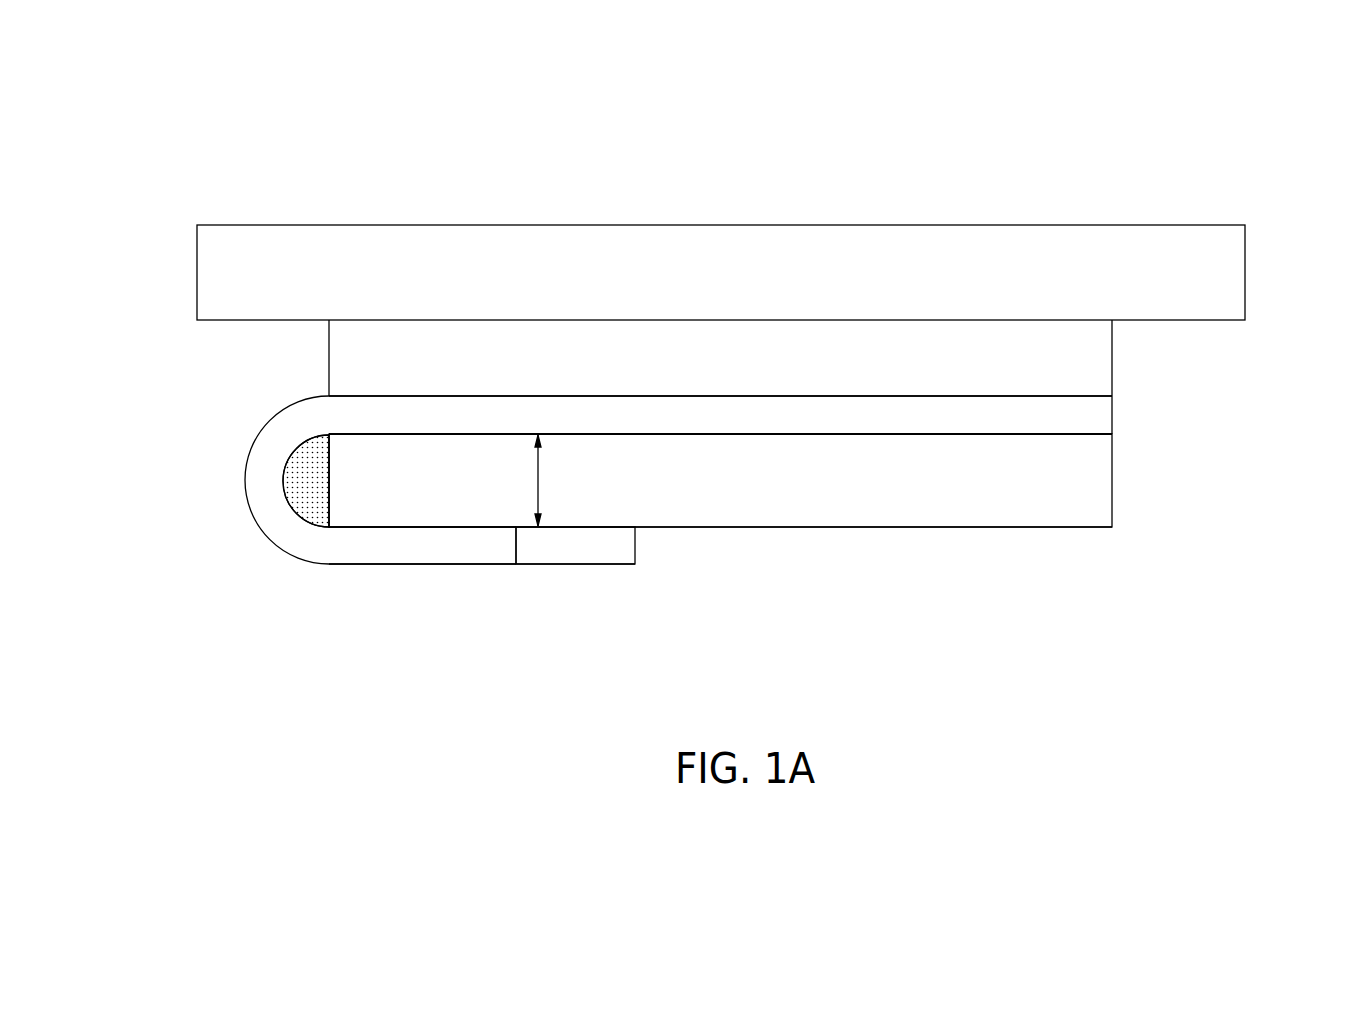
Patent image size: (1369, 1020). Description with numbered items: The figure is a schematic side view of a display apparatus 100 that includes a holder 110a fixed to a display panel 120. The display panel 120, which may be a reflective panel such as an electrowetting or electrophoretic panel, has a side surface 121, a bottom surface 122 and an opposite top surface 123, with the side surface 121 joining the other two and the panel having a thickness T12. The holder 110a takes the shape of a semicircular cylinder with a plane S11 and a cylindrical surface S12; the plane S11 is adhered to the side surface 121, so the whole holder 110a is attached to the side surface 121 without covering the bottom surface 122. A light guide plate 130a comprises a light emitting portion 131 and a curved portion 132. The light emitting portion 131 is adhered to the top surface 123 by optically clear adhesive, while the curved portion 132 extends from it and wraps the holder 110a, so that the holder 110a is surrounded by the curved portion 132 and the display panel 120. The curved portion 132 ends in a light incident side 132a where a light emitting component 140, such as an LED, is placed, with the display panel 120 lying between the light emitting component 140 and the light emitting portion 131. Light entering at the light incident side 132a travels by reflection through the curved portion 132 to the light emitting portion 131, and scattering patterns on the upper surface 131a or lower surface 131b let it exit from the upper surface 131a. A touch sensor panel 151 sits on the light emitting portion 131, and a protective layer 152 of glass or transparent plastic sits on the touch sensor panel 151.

The display apparatus 100 is at (148, 114).
The protective layer 152 is at (1224, 271).
The touch sensor panel 151 is at (1090, 358).
The light guide plate 130a is at (152, 340).
The light emitting portion 131 is at (530, 413).
The curved portion 132 is at (277, 437).
The light incident side 132a is at (487, 545).
The upper surface 131a is at (840, 380).
The lower surface 131b is at (840, 450).
The display panel 120 is at (1090, 483).
The top surface 123 is at (984, 418).
The bottom surface 122 is at (990, 543).
The side surface 121 is at (309, 512).
The thickness T12 is at (565, 480).
The light emitting component 140 is at (625, 545).
The holder 110a is at (290, 467).
The cylindrical surface S12 is at (266, 491).
The plane S11 is at (351, 463).